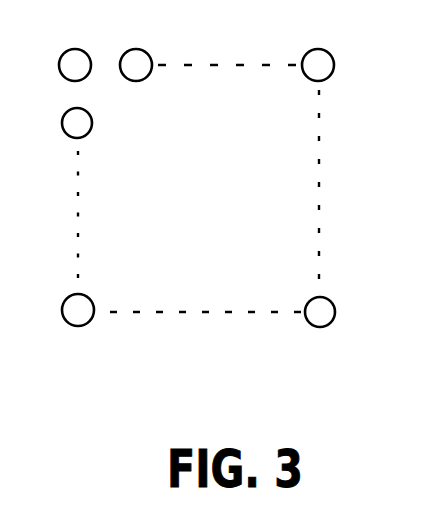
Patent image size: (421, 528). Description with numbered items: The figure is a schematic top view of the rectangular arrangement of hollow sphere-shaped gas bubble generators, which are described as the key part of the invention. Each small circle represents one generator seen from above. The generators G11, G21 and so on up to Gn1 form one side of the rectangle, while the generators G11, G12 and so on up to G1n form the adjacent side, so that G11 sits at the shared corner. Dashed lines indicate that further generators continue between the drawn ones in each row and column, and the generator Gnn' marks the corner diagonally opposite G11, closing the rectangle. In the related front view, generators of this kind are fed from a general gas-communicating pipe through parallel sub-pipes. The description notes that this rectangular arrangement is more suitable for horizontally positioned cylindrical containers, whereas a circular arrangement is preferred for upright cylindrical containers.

The sphere-shaped gas bubble generator G11 is at (79, 63).
The sphere-shaped gas bubble generator G21 is at (151, 57).
The sphere-shaped gas bubble generator Gn1 is at (333, 60).
The sphere-shaped gas bubble generator G12 is at (66, 127).
The sphere-shaped gas bubble generator G1n is at (76, 317).
The sphere-shaped gas bubble generator Gnn' is at (332, 319).